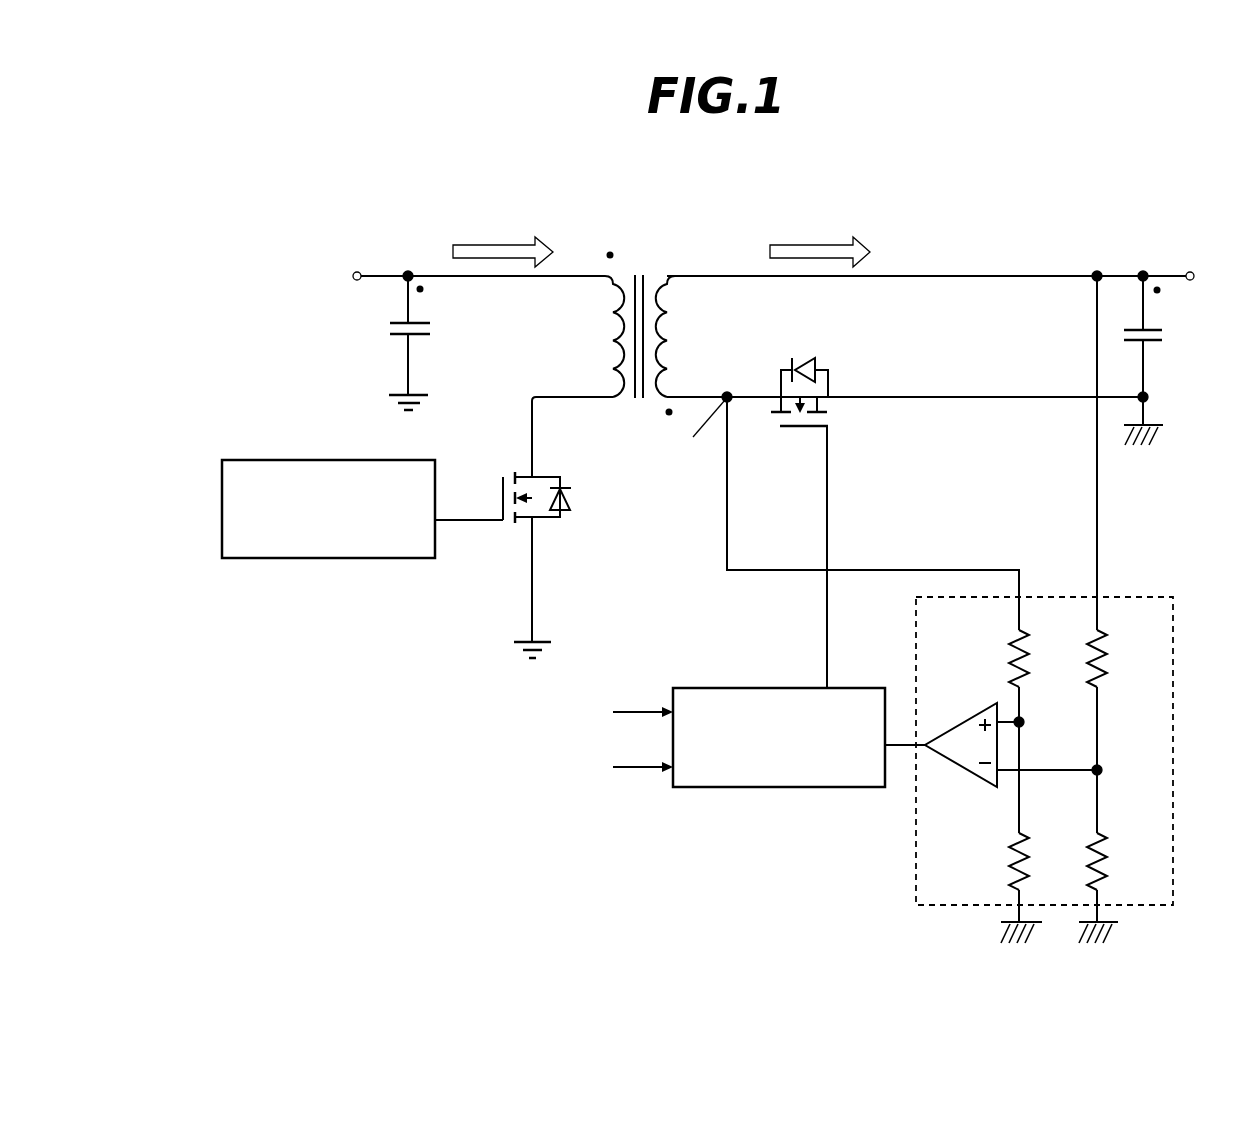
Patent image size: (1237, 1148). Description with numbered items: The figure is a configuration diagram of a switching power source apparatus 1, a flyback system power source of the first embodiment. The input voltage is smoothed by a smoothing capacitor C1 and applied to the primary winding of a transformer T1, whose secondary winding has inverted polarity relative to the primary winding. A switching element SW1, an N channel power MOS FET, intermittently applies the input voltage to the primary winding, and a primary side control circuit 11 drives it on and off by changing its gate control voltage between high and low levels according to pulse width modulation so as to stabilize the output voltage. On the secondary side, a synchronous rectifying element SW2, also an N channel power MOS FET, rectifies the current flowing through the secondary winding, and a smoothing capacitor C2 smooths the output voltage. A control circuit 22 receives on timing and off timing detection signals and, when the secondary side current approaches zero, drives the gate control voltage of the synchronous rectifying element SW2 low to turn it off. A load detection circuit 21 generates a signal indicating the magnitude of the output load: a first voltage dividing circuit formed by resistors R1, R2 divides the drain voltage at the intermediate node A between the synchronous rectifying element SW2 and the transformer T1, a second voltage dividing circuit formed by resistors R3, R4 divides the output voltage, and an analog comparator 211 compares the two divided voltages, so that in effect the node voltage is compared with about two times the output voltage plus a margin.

The switching power source apparatus 1 is at (933, 217).
The primary side control circuit 11 is at (290, 559).
The load detection circuit 21 is at (1143, 597).
The control circuit 22 is at (777, 788).
The analog comparator 211 is at (964, 770).
The smoothing capacitor C1 is at (430, 343).
The smoothing capacitor C2 is at (1164, 360).
The transformer T1 is at (642, 272).
The switching element SW1 is at (575, 565).
The synchronous rectifying element SW2 is at (790, 415).
The resistor of first voltage dividing circuit R1 is at (1042, 658).
The resistor of first voltage dividing circuit R2 is at (1042, 861).
The resistor of second voltage dividing circuit R3 is at (1121, 658).
The resistor of second voltage dividing circuit R4 is at (1121, 861).